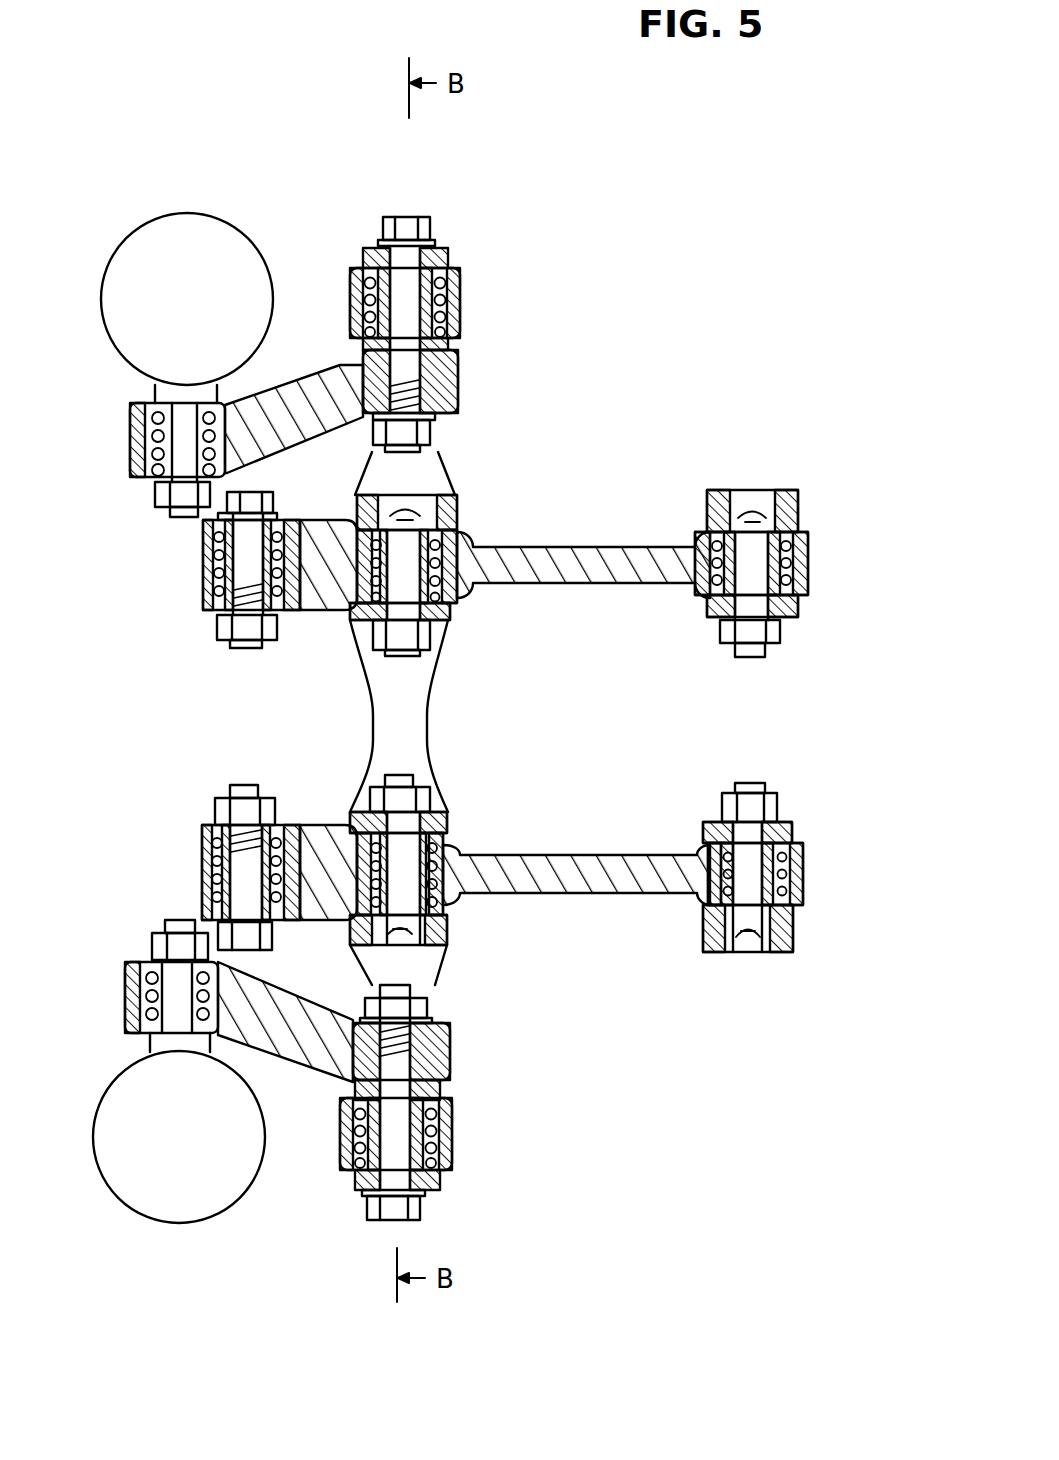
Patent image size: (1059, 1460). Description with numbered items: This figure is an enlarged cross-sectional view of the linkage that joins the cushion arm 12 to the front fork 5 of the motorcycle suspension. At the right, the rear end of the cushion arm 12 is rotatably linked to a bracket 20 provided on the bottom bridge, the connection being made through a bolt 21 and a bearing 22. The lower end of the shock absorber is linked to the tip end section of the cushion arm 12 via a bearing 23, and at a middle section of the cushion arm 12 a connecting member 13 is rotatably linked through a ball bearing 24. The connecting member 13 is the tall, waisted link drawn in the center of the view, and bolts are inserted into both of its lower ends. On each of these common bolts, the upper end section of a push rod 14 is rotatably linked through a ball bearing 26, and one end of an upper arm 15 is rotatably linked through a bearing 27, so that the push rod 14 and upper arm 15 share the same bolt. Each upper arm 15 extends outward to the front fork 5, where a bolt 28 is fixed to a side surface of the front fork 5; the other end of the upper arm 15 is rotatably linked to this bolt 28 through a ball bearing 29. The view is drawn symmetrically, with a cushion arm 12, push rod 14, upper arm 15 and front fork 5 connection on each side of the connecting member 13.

The front fork 5 is at (202, 228).
The cushion arm 12 is at (600, 550).
The connecting member 13 is at (412, 706).
The push rod 14 is at (460, 283).
The upper arm 15 is at (308, 390).
The bracket 20 is at (790, 605).
The bolt 21 is at (752, 550).
The bearing 22 is at (805, 562).
The bearing 23 is at (218, 566).
The ball bearing 24 is at (440, 527).
The ball bearing 26 is at (410, 268).
The bearing 27 is at (453, 364).
The bolt 28 is at (187, 437).
The ball bearing 29 is at (148, 468).